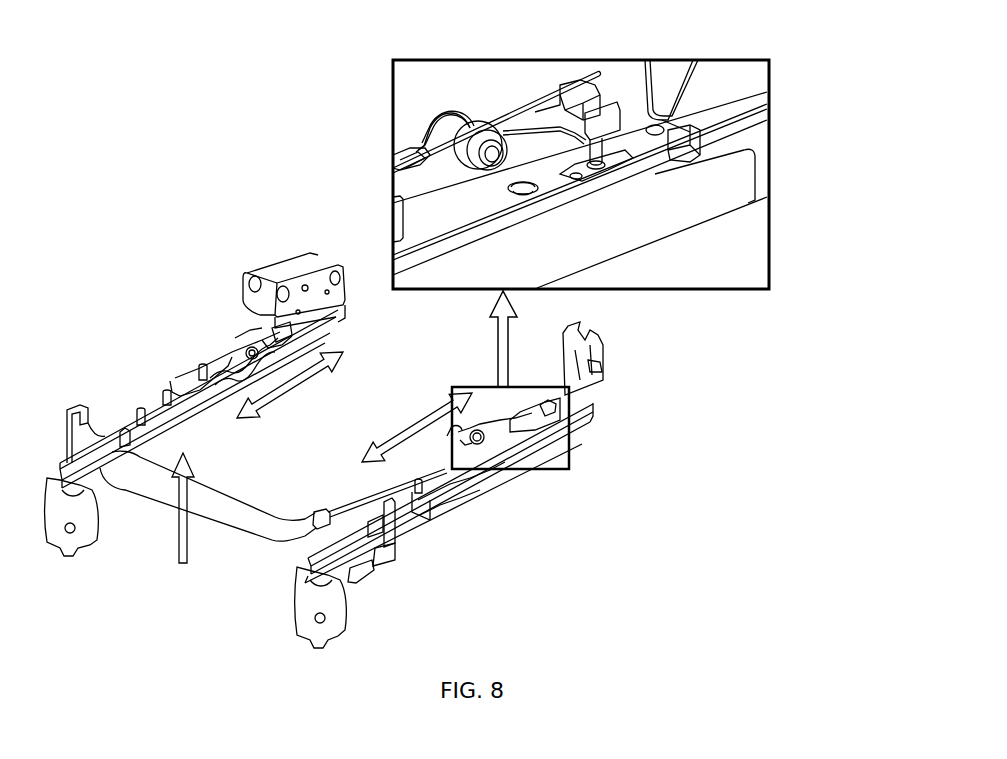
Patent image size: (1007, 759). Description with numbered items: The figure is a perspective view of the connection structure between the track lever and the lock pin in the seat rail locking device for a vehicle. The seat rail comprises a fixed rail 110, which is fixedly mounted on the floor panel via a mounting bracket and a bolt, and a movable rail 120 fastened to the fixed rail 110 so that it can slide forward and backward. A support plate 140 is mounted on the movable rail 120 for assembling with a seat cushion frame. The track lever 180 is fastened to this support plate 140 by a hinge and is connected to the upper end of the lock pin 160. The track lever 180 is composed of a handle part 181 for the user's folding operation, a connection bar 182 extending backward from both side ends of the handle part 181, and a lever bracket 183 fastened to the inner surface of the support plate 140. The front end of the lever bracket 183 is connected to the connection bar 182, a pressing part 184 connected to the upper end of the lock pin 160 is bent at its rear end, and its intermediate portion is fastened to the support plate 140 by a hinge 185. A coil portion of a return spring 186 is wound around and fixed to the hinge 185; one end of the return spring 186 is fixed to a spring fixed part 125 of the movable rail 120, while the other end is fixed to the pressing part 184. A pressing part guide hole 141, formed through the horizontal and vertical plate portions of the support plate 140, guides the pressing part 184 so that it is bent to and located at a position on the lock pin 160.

The fixed rail 110 is at (630, 158).
The movable rail 120 is at (713, 193).
The spring fixed part 125 is at (393, 142).
The support plate 140 is at (535, 92).
The pressing part guide hole 141 is at (567, 178).
The lock pin 160 is at (630, 168).
The track lever 180 is at (215, 528).
The handle part 181 is at (255, 527).
The connection bar 182 is at (340, 507).
The lever bracket 183 is at (430, 120).
The pressing part 184 is at (590, 103).
The hinge 185 is at (500, 137).
The return spring 186 is at (473, 117).